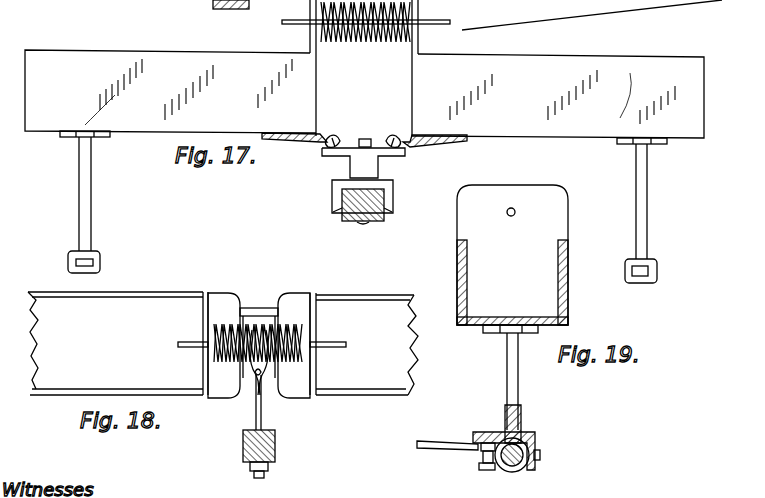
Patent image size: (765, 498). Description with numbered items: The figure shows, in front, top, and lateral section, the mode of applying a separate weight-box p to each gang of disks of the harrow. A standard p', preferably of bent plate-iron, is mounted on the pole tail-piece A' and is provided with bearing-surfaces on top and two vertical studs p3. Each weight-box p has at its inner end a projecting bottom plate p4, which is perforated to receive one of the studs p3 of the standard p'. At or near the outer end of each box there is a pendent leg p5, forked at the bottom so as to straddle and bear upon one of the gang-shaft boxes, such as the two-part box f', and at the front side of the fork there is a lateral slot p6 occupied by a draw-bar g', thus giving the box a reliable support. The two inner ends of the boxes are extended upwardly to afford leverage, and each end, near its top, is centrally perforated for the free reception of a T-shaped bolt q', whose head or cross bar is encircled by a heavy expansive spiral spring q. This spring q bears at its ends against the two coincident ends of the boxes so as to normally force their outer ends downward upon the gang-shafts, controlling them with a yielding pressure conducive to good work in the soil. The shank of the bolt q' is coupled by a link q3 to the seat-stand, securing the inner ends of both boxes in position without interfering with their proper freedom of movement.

In FIG. 17, the weight-box p is at (364, 69).
In FIG. 18, the weight-box p is at (223, 343).
In FIG. 19, the weight-box p is at (512, 255).
In FIG. 17, the standard p' is at (363, 181).
In FIG. 18, the standard p' is at (259, 343).
In FIG. 17, the vertical studs p3 is at (332, 144).
In FIG. 17, the projecting bottom plate p4 is at (306, 139).
In FIG. 18, the projecting bottom plate p4 is at (226, 306).
In FIG. 17, the pendent leg p5 is at (365, 195).
In FIG. 19, the pendent leg p5 is at (512, 397).
In FIG. 17, the lateral slot p6 is at (93, 262).
In FIG. 19, the lateral slot p6 is at (470, 462).
In FIG. 17, the expansive spiral spring q is at (365, 28).
In FIG. 18, the expansive spiral spring q is at (258, 355).
In FIG. 17, the T-shaped bolt q' is at (368, 12).
In FIG. 18, the T-shaped bolt q' is at (266, 383).
In FIG. 18, the link q3 is at (252, 398).
In FIG. 17, the pole tail-piece A' is at (383, 236).
In FIG. 19, the draw-bar g' is at (447, 459).
In FIG. 19, the two-part box f' is at (506, 465).